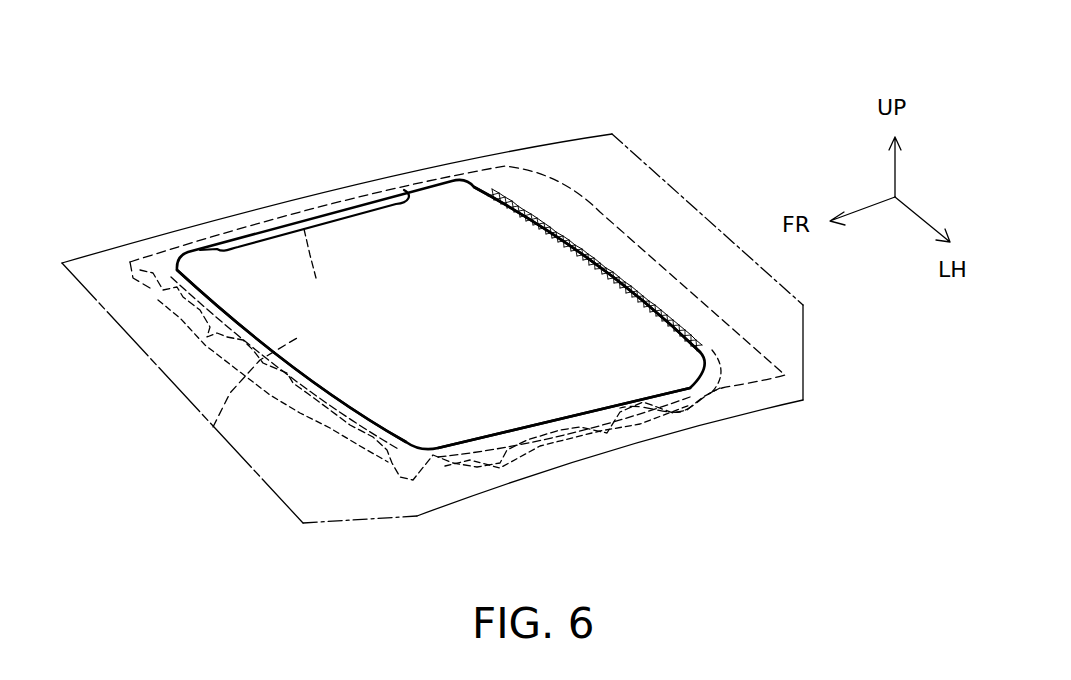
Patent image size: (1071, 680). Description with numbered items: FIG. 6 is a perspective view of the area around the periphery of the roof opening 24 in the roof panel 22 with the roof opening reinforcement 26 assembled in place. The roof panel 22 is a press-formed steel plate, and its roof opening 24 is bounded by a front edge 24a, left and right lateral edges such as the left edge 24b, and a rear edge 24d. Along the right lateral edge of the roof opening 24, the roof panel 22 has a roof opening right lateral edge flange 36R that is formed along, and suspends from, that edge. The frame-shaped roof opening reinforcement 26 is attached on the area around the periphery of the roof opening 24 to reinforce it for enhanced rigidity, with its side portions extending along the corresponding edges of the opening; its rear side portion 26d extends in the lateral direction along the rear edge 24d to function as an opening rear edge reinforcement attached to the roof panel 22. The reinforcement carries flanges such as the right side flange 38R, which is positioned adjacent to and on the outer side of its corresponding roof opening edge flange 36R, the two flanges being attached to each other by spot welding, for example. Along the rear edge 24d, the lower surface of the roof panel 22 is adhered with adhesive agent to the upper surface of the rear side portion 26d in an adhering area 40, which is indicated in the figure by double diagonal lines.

The roof panel 22 is at (597, 167).
The roof opening 24 is at (381, 398).
The front edge 24a is at (303, 377).
The left edge 24b is at (548, 420).
The rear edge 24d is at (578, 248).
The roof opening reinforcement 26 is at (213, 427).
The rear side portion 26d is at (640, 242).
The roof opening right lateral edge flange 36R is at (350, 216).
The right side flange 38R is at (316, 278).
The adhering area 40 is at (542, 230).